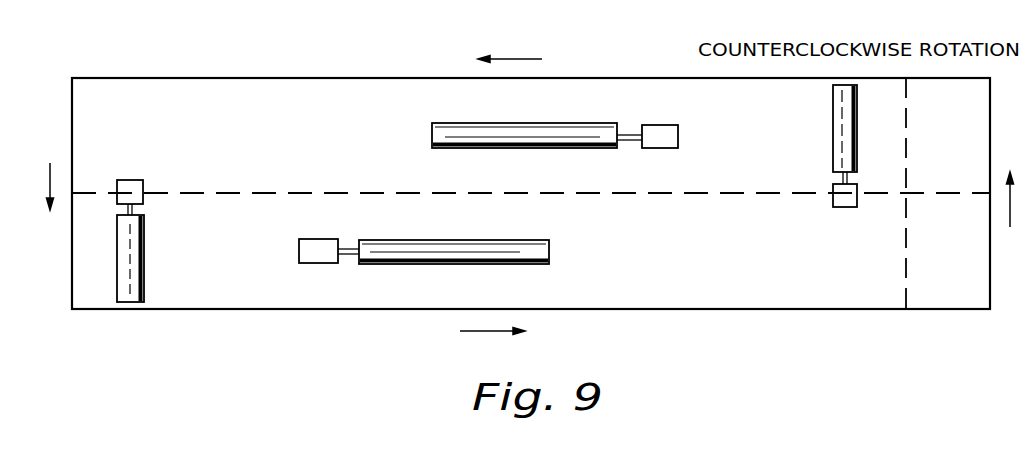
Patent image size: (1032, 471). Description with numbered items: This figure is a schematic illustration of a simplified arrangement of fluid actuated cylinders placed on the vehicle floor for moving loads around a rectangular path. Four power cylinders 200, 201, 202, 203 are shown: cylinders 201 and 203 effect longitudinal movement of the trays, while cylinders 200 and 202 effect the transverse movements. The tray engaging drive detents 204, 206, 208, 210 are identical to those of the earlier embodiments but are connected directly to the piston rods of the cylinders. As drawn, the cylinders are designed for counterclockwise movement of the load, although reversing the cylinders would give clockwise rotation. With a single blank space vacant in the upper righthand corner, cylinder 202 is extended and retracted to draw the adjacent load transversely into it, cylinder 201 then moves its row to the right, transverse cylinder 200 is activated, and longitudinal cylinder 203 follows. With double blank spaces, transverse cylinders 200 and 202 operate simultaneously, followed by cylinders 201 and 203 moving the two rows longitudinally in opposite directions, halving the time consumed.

The power cylinder 200 is at (137, 265).
The power cylinder 201 is at (472, 246).
The power cylinder 202 is at (840, 156).
The power cylinder 203 is at (523, 132).
The detent 204 is at (142, 195).
The detent 206 is at (665, 128).
The detent 208 is at (845, 200).
The detent 210 is at (316, 245).